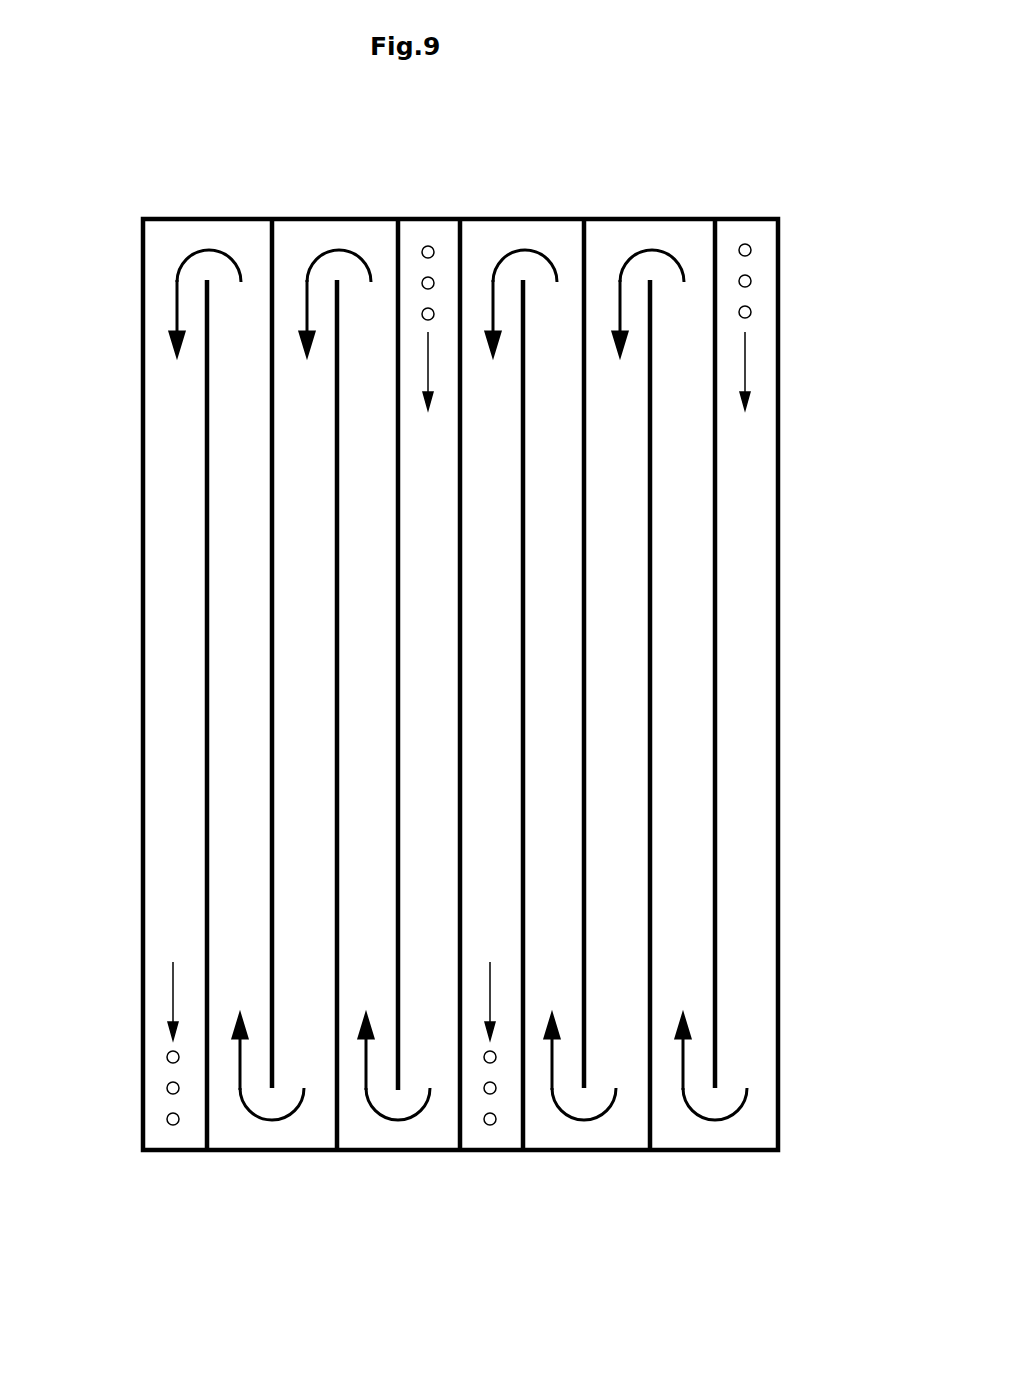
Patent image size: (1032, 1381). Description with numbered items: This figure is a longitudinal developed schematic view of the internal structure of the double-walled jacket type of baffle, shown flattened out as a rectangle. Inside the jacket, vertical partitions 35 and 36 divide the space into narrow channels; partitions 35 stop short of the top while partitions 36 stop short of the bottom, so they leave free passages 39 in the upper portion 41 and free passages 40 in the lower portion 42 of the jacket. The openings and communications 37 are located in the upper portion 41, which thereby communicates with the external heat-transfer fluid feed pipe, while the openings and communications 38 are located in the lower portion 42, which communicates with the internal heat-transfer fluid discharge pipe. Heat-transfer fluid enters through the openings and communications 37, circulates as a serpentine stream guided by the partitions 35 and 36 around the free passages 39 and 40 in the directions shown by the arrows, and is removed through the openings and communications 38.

The vertical partition 35 is at (205, 664).
The vertical partition 36 is at (270, 245).
The openings and communications 37 is at (432, 247).
The openings and communications 38 is at (166, 1122).
The free passage 39 is at (177, 243).
The free passage 40 is at (240, 1132).
The upper portion 41 is at (143, 304).
The lower portion 42 is at (140, 1037).